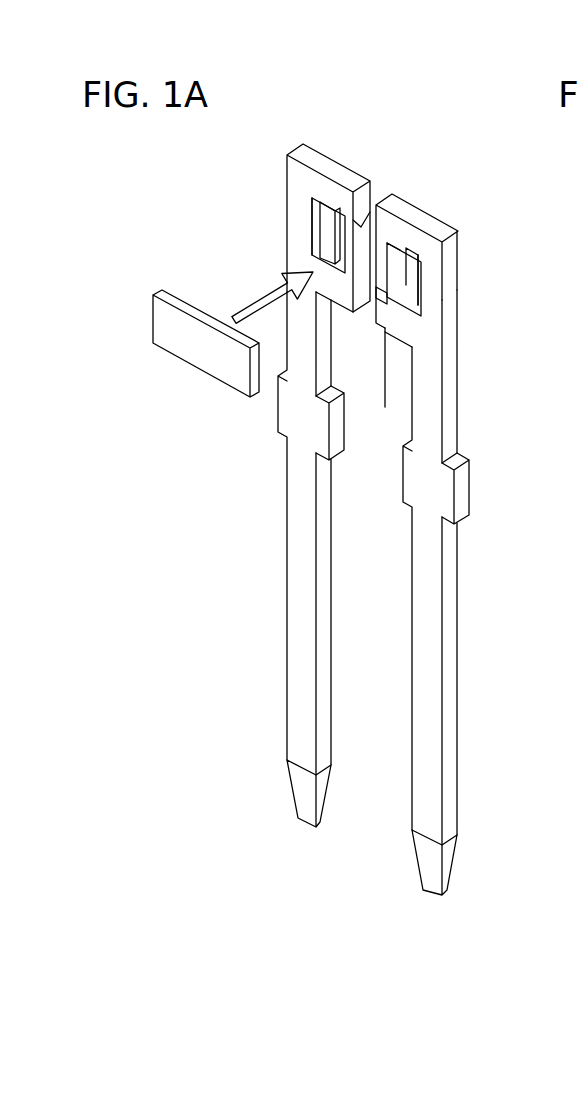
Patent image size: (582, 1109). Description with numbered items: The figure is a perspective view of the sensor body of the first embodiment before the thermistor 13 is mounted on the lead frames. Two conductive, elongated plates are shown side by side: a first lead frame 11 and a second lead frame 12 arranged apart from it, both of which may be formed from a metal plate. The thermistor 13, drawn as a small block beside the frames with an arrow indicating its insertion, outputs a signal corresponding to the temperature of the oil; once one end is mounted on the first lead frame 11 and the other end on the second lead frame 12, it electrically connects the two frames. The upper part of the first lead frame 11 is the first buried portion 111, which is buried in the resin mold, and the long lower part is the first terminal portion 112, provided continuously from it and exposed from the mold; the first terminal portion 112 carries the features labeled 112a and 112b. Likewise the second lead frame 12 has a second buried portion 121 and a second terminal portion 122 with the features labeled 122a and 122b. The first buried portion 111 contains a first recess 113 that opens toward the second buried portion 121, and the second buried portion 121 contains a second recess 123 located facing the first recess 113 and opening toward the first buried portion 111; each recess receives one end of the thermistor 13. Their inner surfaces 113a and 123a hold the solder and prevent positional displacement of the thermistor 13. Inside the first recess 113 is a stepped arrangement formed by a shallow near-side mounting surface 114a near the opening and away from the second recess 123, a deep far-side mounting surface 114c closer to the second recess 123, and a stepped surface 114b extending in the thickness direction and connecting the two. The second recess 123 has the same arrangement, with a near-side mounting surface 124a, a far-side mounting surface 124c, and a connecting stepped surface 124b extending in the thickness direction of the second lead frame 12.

The first lead frame 11 is at (293, 508).
The second lead frame 12 is at (469, 551).
The thermistor 13 is at (196, 347).
The first buried portion 111 is at (293, 275).
The first terminal portion 112 is at (289, 599).
The tip of leg portion 112a is at (305, 828).
The protrusion of leg portion 112b is at (334, 448).
The first recess 113 is at (326, 277).
The inner surface 113a is at (323, 195).
The near-side mounting surface 114a is at (323, 223).
The stepped surface 114b is at (350, 200).
The far-side mounting surface 114c is at (350, 243).
The second buried portion 121 is at (463, 280).
The second terminal portion 122 is at (490, 634).
The tip of leg portion 122a is at (428, 897).
The protrusion of leg portion 122b is at (462, 495).
The second recess 123 is at (390, 342).
The inner surface 123a is at (392, 247).
The near-side mounting surface 124a is at (412, 277).
The stepped surface 124b is at (392, 298).
The far-side mounting surface 124c is at (438, 188).